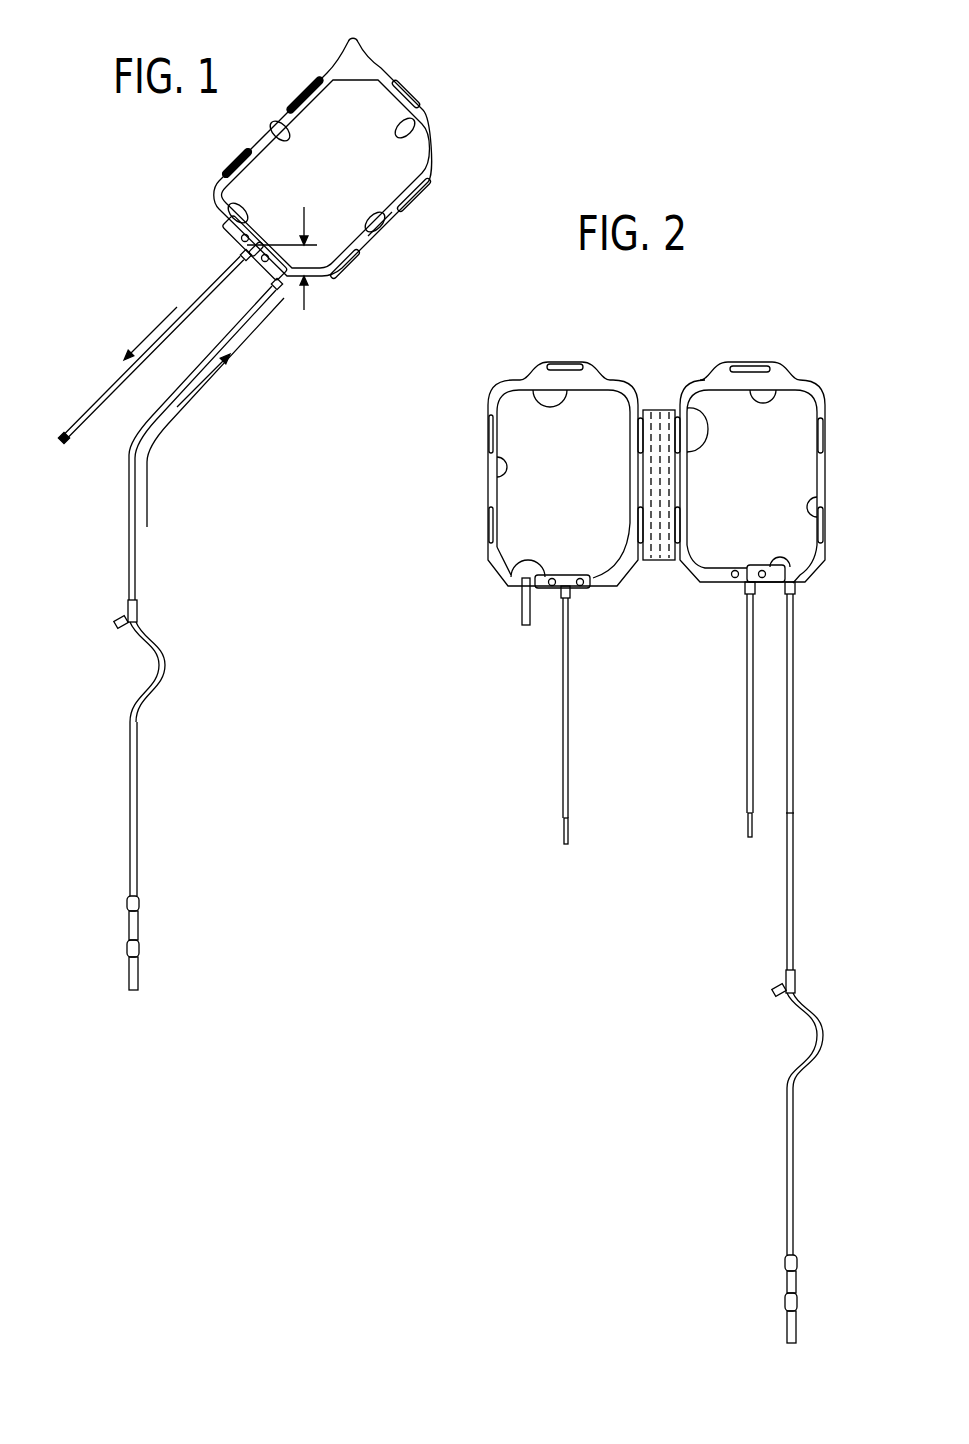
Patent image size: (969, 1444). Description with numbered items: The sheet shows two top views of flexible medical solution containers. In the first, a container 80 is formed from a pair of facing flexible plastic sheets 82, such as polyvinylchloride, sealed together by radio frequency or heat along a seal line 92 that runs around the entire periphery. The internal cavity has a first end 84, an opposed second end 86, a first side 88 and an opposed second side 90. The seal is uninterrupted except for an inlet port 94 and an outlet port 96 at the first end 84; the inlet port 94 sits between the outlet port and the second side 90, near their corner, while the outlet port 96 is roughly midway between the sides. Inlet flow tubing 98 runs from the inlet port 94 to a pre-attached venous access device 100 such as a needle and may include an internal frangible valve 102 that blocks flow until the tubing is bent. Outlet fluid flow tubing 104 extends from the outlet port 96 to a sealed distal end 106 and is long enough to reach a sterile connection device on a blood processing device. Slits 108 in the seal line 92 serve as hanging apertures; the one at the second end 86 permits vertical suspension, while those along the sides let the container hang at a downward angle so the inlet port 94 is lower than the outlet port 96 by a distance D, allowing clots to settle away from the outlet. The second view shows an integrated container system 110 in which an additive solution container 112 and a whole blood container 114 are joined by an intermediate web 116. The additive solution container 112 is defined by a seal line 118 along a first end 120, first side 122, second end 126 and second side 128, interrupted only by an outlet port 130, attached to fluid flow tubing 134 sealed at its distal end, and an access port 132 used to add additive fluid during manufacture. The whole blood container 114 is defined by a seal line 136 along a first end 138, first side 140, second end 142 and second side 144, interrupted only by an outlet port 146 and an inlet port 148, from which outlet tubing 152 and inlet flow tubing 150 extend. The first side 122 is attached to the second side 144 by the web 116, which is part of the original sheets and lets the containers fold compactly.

In FIG. 1, the container 80 is at (450, 155).
In FIG. 1, the flexible plastic sheets 82 is at (400, 165).
In FIG. 1, the first end 84 is at (232, 207).
In FIG. 1, the second end 86 is at (415, 133).
In FIG. 1, the first side 88 is at (272, 135).
In FIG. 1, the second side 90 is at (392, 232).
In FIG. 1, the seal line 92 is at (374, 244).
In FIG. 1, the inlet port 94 is at (296, 290).
In FIG. 1, the outlet port 96 is at (242, 252).
In FIG. 1, the inlet flow tubing 98 is at (137, 565).
In FIG. 1, the venous access device 100 is at (140, 967).
In FIG. 1, the internal frangible valve 102 is at (140, 910).
In FIG. 1, the outlet fluid flow tubing 104 is at (193, 305).
In FIG. 1, the sealed distal end 106 is at (68, 433).
In FIG. 1, the slits 108 is at (353, 38).
In FIG. 1, the distance D is at (306, 303).
In FIG. 2, the integrated container system 110 is at (697, 366).
In FIG. 2, the additive solution container 112 is at (509, 542).
In FIG. 2, the whole blood container 114 is at (802, 480).
In FIG. 2, the intermediate web 116 is at (663, 543).
In FIG. 2, the seal line 118 is at (489, 490).
In FIG. 2, the first end 120 is at (507, 560).
In FIG. 2, the first side 122 is at (600, 574).
In FIG. 2, the second end 126 is at (536, 385).
In FIG. 2, the second side 128 is at (490, 458).
In FIG. 2, the outlet port 130 is at (557, 593).
In FIG. 2, the access port 132 is at (520, 613).
In FIG. 2, the fluid flow tubing 134 is at (570, 725).
In FIG. 2, the seal line 136 is at (810, 394).
In FIG. 2, the first end 138 is at (792, 570).
In FIG. 2, the first side 140 is at (810, 503).
In FIG. 2, the second end 142 is at (783, 385).
In FIG. 2, the second side 144 is at (695, 418).
In FIG. 2, the outlet port 146 is at (745, 588).
In FIG. 2, the inlet port 148 is at (792, 578).
In FIG. 2, the inlet flow tubing 150 is at (794, 744).
In FIG. 2, the outlet tubing 152 is at (746, 743).